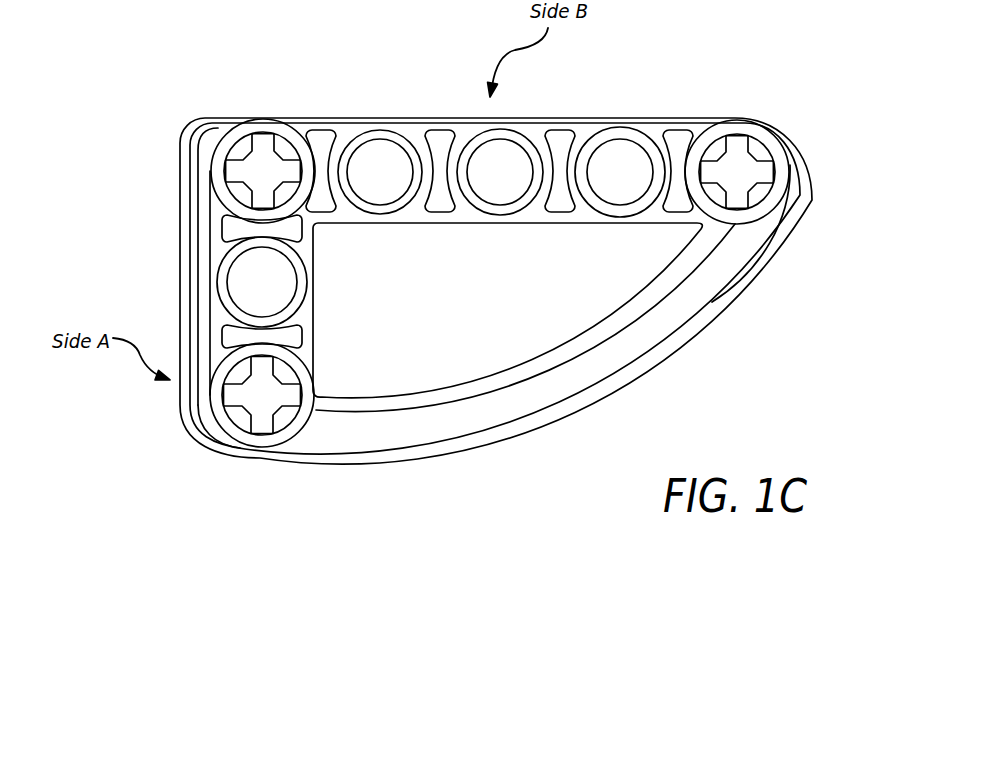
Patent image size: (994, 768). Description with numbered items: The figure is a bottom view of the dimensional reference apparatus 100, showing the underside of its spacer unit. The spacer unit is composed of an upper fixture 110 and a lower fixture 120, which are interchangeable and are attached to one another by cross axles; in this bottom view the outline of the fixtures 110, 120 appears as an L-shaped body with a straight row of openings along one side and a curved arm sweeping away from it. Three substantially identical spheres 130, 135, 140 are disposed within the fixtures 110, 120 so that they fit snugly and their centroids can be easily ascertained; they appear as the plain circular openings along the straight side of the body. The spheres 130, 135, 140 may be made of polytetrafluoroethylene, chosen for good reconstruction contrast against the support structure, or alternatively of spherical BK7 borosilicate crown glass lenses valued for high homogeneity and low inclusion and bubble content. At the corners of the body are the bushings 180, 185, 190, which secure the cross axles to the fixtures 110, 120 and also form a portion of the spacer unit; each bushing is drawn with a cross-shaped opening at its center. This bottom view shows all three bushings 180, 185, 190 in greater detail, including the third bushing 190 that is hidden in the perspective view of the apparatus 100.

The dimensional reference apparatus 100 is at (747, 57).
The upper fixture 110 is at (163, 228).
The lower fixture 120 is at (635, 350).
The sphere 130 is at (253, 278).
The sphere 135 is at (378, 155).
The sphere 140 is at (620, 153).
The bushing 180 is at (215, 172).
The bushing 185 is at (773, 147).
The bushing 190 is at (238, 442).